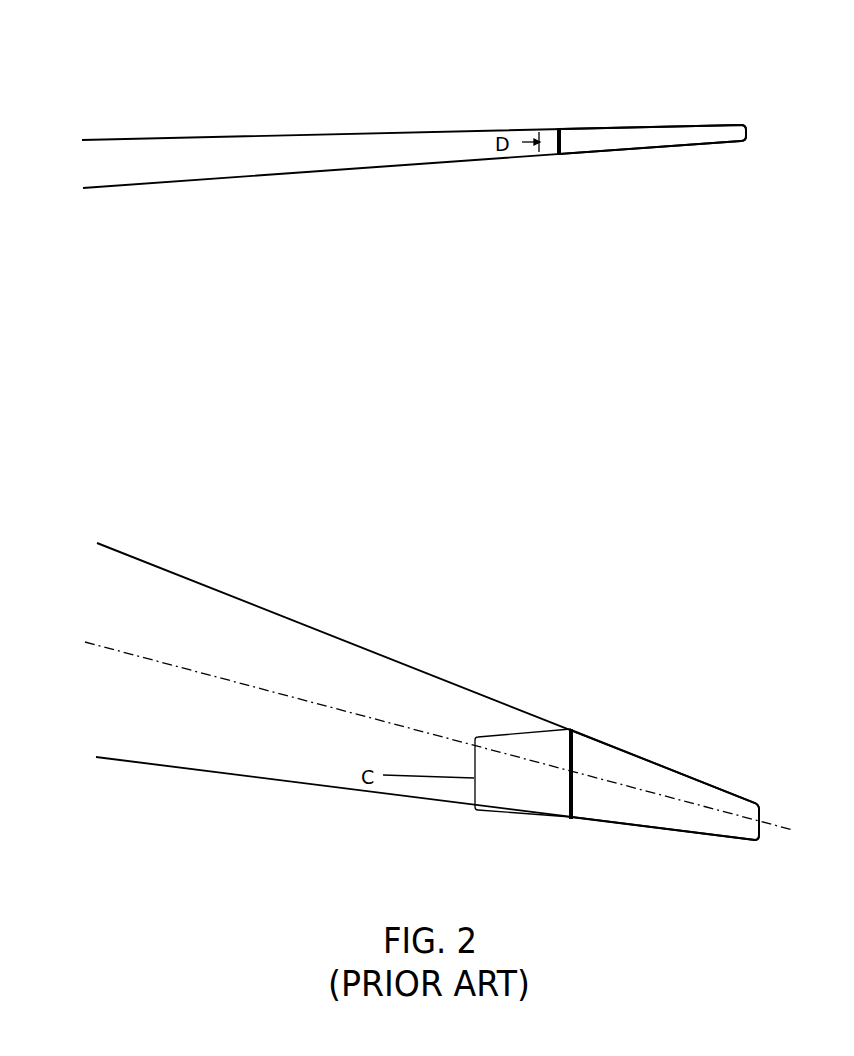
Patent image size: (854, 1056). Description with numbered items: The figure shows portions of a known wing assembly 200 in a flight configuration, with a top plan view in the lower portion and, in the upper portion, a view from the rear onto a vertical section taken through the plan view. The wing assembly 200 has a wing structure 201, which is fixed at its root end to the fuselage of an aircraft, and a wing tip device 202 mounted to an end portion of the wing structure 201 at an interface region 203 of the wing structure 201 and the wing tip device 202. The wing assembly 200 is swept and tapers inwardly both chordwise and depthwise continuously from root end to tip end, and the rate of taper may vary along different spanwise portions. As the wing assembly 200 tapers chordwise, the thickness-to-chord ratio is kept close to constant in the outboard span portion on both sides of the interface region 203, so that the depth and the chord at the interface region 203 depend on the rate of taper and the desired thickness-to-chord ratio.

The wing assembly 200 is at (371, 181).
The wing structure 201 is at (161, 172).
The wing tip device 202 is at (623, 138).
The interface region 203 is at (563, 146).